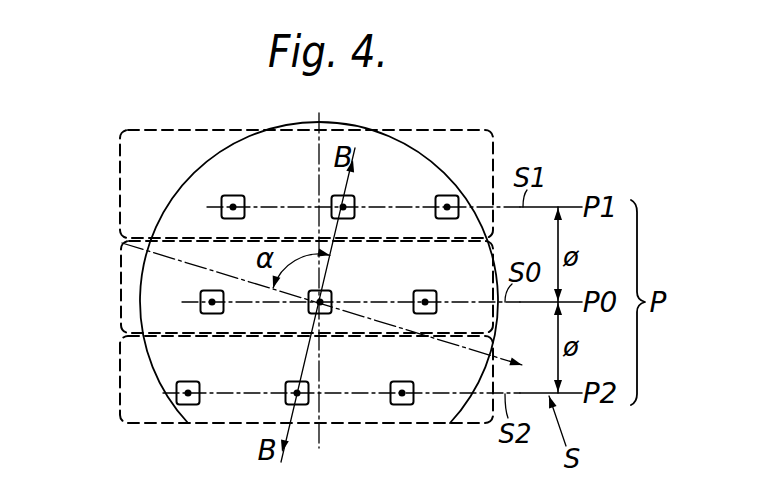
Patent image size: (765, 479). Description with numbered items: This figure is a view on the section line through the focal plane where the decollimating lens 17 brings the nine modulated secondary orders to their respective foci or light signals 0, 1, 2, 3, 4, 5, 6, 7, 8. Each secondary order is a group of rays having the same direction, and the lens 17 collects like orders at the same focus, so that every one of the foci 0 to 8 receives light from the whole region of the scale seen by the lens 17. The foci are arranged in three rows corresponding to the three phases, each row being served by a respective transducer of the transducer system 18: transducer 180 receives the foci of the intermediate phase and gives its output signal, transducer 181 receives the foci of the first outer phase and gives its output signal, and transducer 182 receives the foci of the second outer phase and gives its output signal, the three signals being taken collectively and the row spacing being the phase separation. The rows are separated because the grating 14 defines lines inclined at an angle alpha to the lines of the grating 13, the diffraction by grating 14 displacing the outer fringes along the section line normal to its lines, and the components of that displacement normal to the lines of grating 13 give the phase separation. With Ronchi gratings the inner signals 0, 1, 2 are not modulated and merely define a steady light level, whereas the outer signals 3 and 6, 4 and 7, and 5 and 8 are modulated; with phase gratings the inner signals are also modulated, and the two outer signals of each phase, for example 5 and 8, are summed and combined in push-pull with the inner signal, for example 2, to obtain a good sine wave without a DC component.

The transducer system 18 is at (267, 244).
The decollimating lens 17 is at (415, 153).
The transducer 181 is at (118, 173).
The transducer 180 is at (120, 283).
The transducer 182 is at (120, 378).
The grating 13 is at (322, 440).
The grating 14 is at (515, 360).
The focus 0 is at (326, 297).
The focus 1 is at (348, 205).
The focus 2 is at (295, 390).
The focus 3 is at (428, 298).
The focus 4 is at (450, 203).
The focus 5 is at (405, 390).
The focus 6 is at (208, 300).
The focus 7 is at (233, 200).
The focus 8 is at (191, 390).